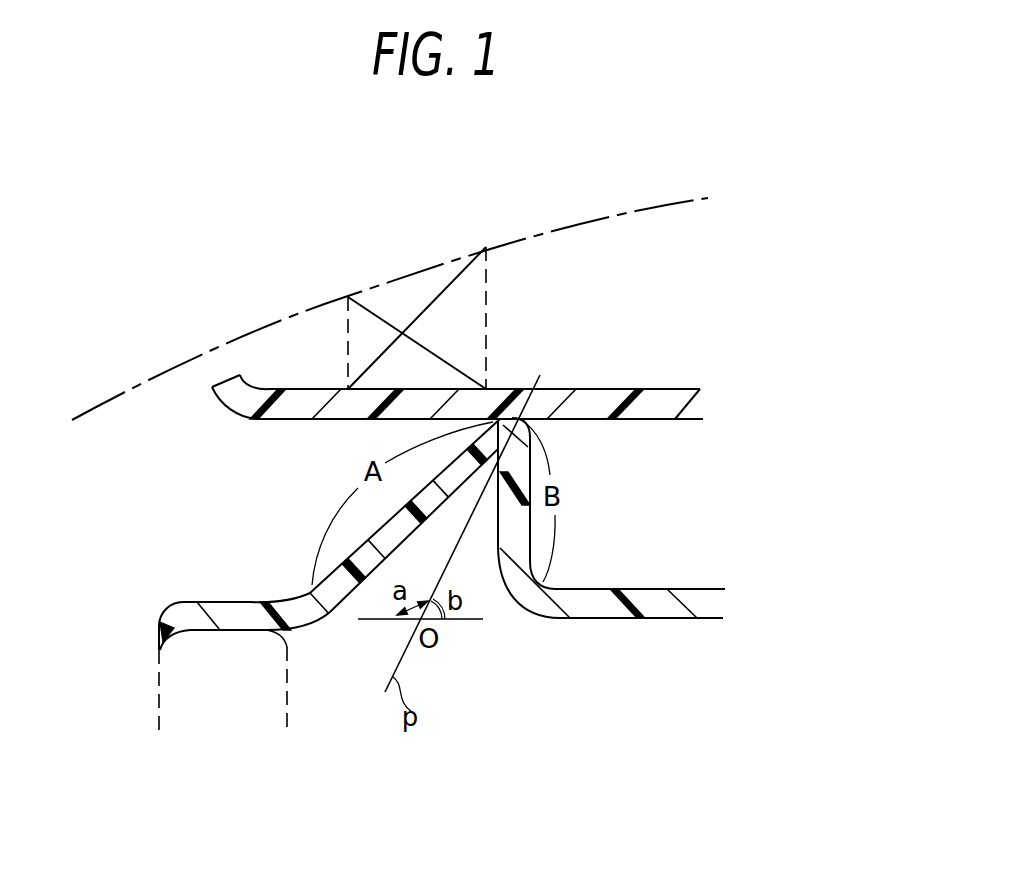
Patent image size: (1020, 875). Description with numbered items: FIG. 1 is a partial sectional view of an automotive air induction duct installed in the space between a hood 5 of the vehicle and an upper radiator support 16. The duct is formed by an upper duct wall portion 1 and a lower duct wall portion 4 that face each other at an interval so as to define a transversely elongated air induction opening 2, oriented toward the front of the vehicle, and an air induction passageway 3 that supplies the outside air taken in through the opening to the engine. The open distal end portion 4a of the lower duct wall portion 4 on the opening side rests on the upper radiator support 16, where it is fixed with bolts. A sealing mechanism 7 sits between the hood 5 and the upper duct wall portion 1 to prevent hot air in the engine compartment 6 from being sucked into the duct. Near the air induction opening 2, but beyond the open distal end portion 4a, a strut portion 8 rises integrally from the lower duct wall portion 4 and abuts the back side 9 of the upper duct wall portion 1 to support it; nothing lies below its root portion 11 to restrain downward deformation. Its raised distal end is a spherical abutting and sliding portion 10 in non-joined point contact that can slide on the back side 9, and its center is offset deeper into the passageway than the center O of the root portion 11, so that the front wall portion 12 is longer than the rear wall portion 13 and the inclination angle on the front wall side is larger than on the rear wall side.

The upper duct wall portion 1 is at (700, 402).
The air induction opening 2 is at (170, 552).
The air induction passageway 3 is at (703, 507).
The lower duct wall portion 4 is at (715, 607).
The open distal end portion 4a is at (240, 612).
The hood 5 is at (572, 218).
The engine compartment 6 is at (703, 283).
The sealing mechanism 7 is at (489, 282).
The strut portion 8 is at (586, 457).
The back side 9 is at (686, 420).
The spherical abutting and sliding portion 10 is at (513, 425).
The root portion 11 is at (513, 598).
The front wall portion 12 is at (392, 510).
The rear wall portion 13 is at (520, 540).
The upper radiator support 16 is at (157, 712).